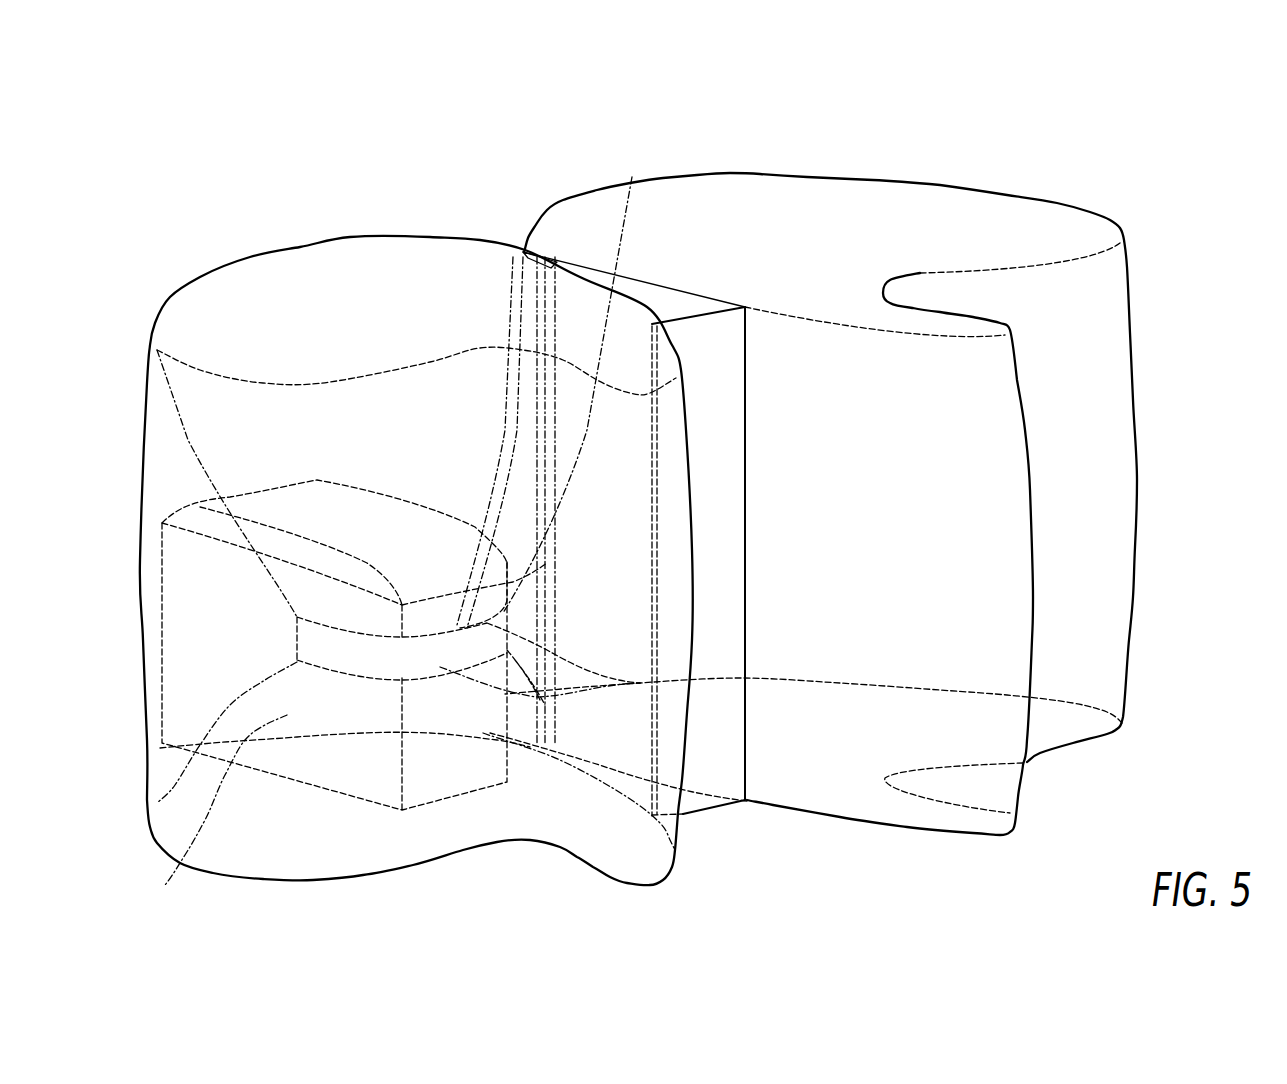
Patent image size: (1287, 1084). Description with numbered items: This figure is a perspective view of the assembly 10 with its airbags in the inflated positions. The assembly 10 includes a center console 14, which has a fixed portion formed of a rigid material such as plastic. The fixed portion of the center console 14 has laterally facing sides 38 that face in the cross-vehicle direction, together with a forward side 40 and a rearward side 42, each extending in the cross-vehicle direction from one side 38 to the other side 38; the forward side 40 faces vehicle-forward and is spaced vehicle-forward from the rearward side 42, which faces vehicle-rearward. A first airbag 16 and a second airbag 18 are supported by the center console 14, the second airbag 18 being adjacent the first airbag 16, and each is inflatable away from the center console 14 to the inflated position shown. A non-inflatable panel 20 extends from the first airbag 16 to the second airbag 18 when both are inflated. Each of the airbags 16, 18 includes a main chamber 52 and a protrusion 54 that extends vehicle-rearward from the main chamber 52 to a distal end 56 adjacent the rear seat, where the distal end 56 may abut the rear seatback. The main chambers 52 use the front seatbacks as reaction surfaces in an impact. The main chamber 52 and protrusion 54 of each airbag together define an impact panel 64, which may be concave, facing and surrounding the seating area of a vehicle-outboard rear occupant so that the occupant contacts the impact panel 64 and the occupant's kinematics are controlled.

The assembly 10 is at (200, 130).
The center console 14 is at (373, 510).
The first airbag 16 is at (196, 272).
The second airbag 18 is at (1070, 206).
The non-inflatable panel 20 is at (722, 393).
The sides 38 is at (165, 885).
The forward side 40 is at (160, 600).
The rearward side 42 is at (450, 770).
The main chamber 52 is at (370, 265).
The protrusion 54 is at (627, 362).
The distal end 56 is at (690, 527).
The impact panel 64 is at (568, 415).